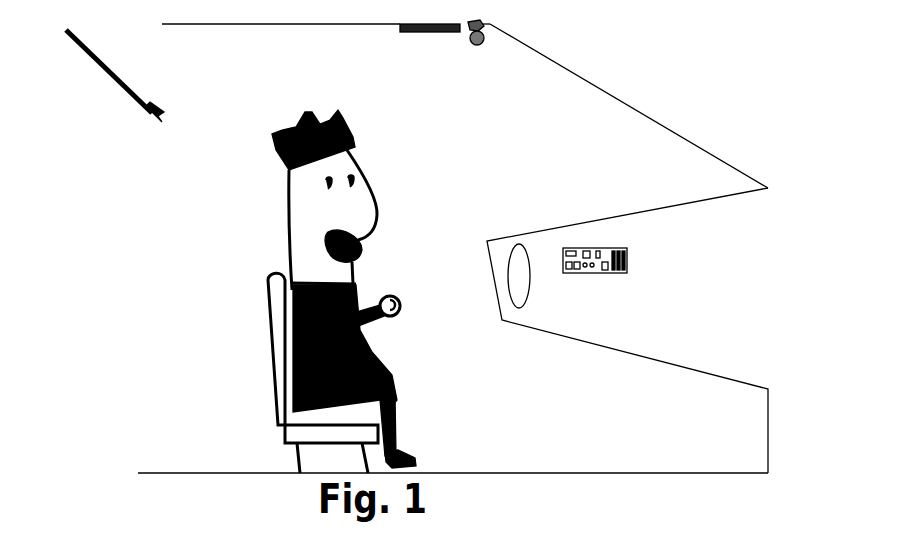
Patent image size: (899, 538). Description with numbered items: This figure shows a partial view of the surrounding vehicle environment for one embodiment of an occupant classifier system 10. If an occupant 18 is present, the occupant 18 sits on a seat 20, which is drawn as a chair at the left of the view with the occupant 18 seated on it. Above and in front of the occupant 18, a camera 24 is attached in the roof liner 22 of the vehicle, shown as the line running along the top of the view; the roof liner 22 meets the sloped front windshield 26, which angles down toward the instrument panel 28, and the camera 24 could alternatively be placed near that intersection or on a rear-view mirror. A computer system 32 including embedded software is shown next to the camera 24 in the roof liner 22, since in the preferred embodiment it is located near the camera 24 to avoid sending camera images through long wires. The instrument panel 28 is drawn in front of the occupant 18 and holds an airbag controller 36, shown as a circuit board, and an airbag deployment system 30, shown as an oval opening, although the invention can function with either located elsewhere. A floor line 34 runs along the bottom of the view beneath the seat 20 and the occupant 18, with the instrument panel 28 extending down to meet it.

The occupant classifier system 10 is at (105, 67).
The occupant 18 is at (288, 211).
The seat 20 is at (266, 303).
The roof liner 22 is at (304, 25).
The camera 24 is at (485, 42).
The front windshield 26 is at (688, 140).
The instrument panel 28 is at (486, 240).
The airbag deployment system 30 is at (533, 290).
The computer system 32 is at (438, 31).
The floor 34 is at (569, 473).
The airbag controller 36 is at (622, 248).